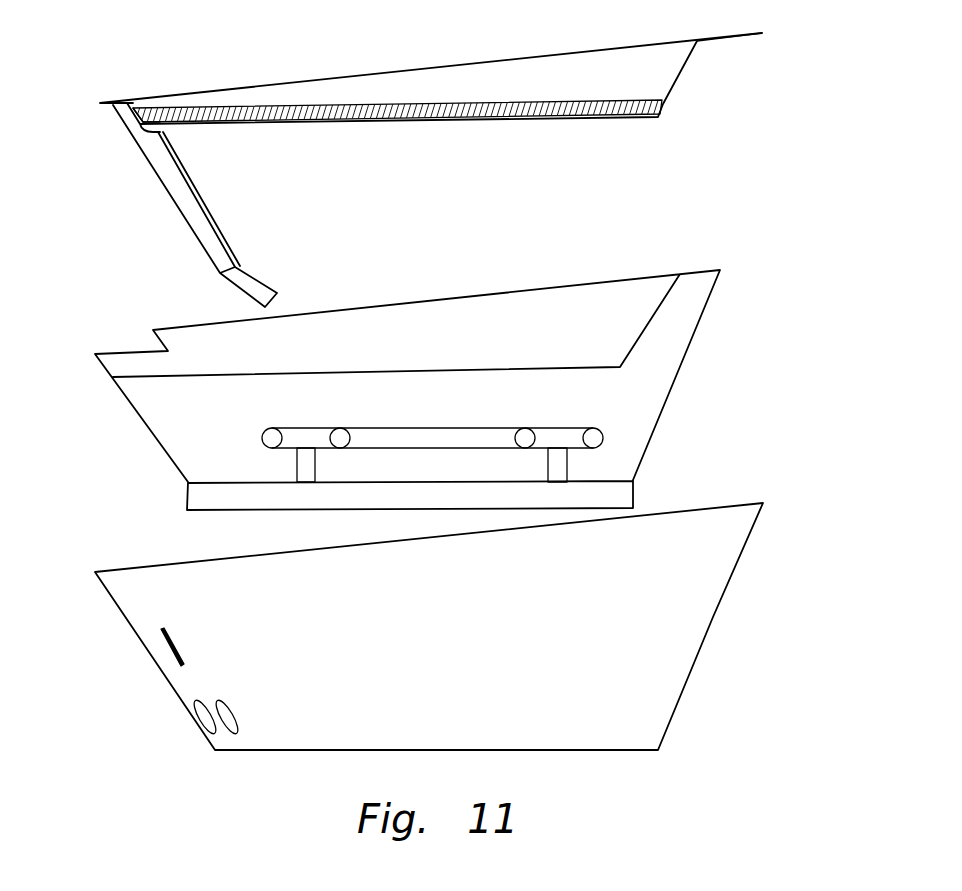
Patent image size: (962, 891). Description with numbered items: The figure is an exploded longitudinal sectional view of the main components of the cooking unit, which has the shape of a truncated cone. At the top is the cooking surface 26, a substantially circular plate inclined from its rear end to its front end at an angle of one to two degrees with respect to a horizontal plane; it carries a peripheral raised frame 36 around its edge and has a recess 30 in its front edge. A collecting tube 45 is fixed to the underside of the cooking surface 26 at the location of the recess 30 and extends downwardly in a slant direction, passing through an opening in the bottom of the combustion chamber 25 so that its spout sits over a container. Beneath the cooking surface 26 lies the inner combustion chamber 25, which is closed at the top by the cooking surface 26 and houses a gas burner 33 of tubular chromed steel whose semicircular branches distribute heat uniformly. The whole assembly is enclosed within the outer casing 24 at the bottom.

The outer casing 24 is at (453, 651).
The inner combustion chamber 25 is at (449, 411).
The cooking surface 26 is at (343, 107).
The recess 30 is at (142, 117).
The gas burner 33 is at (605, 435).
The peripheral raised frame 36 is at (699, 43).
The collecting tube 45 is at (177, 210).